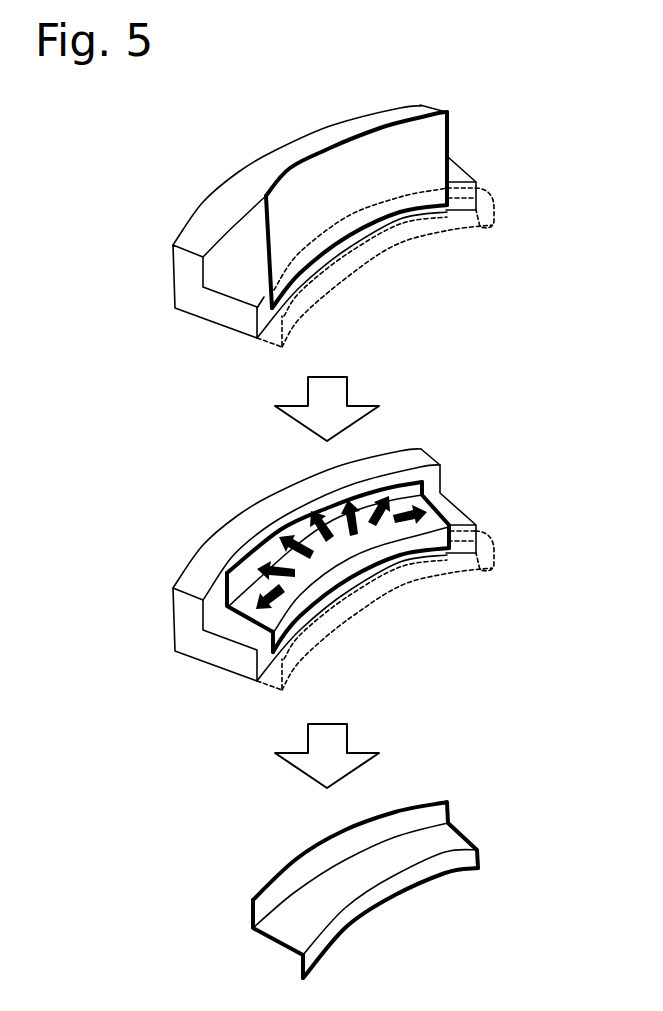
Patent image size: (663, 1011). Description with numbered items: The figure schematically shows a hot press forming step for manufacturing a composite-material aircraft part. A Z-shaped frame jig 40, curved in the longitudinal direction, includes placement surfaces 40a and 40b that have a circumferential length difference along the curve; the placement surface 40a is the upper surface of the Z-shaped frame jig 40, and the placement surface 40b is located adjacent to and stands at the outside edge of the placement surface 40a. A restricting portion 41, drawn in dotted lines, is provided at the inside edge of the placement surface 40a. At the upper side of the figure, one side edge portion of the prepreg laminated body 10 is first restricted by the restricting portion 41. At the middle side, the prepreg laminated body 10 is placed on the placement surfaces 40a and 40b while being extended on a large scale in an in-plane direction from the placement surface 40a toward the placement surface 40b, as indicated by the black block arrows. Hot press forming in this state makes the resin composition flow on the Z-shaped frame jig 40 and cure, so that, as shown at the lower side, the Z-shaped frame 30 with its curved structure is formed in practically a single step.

The prepreg laminated body 10 is at (450, 140).
The Z-shaped frame 30 is at (460, 828).
The Z-shaped frame jig 40 is at (192, 314).
The placement surface 40a is at (236, 280).
The placement surface 40b is at (235, 249).
The restricting portion 41 is at (395, 240).